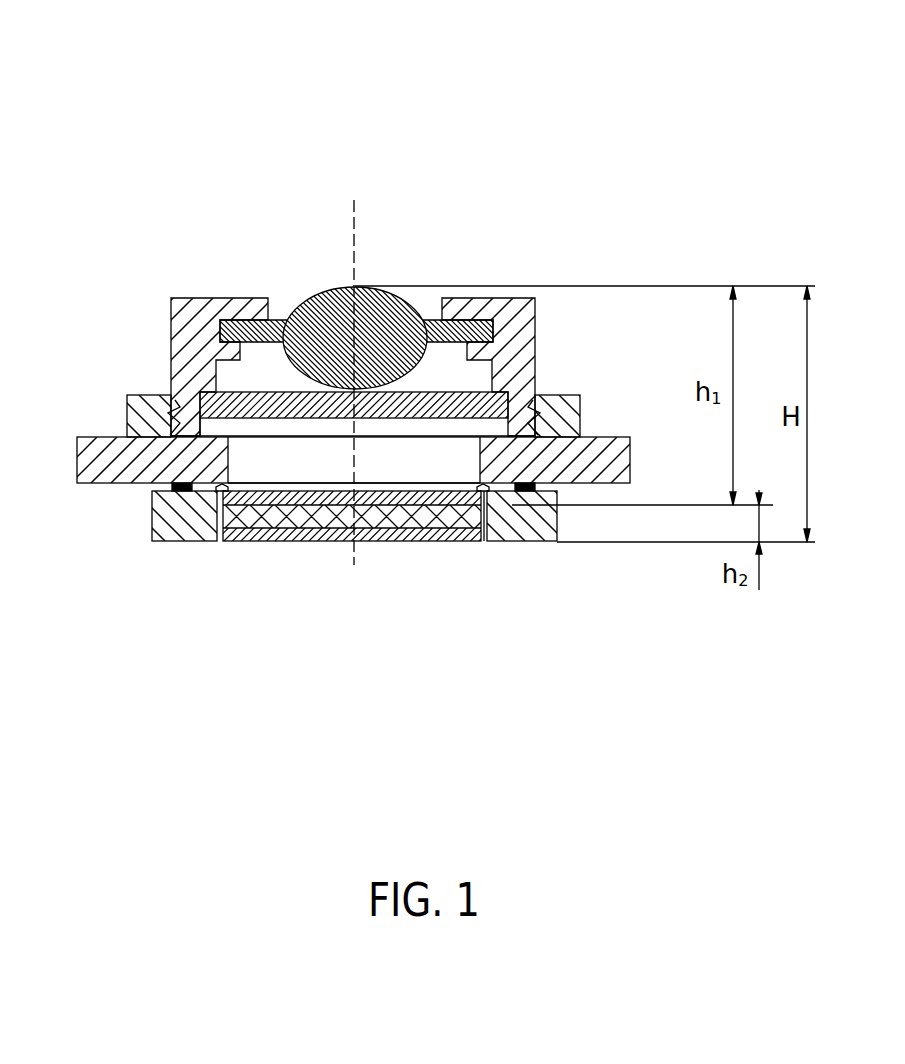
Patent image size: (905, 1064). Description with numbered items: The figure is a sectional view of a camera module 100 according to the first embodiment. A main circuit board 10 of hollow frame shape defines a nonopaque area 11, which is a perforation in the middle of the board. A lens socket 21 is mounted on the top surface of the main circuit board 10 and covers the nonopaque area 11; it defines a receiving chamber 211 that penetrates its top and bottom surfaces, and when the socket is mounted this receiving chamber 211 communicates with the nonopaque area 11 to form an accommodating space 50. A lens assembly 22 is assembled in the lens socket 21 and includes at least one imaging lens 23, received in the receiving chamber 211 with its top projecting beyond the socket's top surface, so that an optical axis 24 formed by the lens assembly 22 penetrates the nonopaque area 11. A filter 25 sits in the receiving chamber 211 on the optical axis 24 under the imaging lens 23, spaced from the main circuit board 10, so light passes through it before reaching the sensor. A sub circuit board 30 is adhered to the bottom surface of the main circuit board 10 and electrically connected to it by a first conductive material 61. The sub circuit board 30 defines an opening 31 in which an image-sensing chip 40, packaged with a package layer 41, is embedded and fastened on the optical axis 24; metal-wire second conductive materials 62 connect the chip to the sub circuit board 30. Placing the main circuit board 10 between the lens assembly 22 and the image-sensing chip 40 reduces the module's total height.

The camera module 100 is at (34, 49).
The main circuit board 10 is at (612, 468).
The nonopaque area 11 is at (270, 466).
The lens socket 21 is at (525, 318).
The receiving chamber 211 is at (243, 427).
The lens assembly 22 is at (196, 257).
The imaging lens 23 is at (359, 290).
The optical axis 24 is at (354, 242).
The filter 25 is at (447, 392).
The sub circuit board 30 is at (517, 517).
The opening 31 is at (478, 523).
The image-sensing chip 40 is at (331, 530).
The package layer 41 is at (421, 535).
The accommodating space 50 is at (290, 598).
The first conductive material 61 is at (170, 489).
The second conductive materials 62 is at (223, 493).